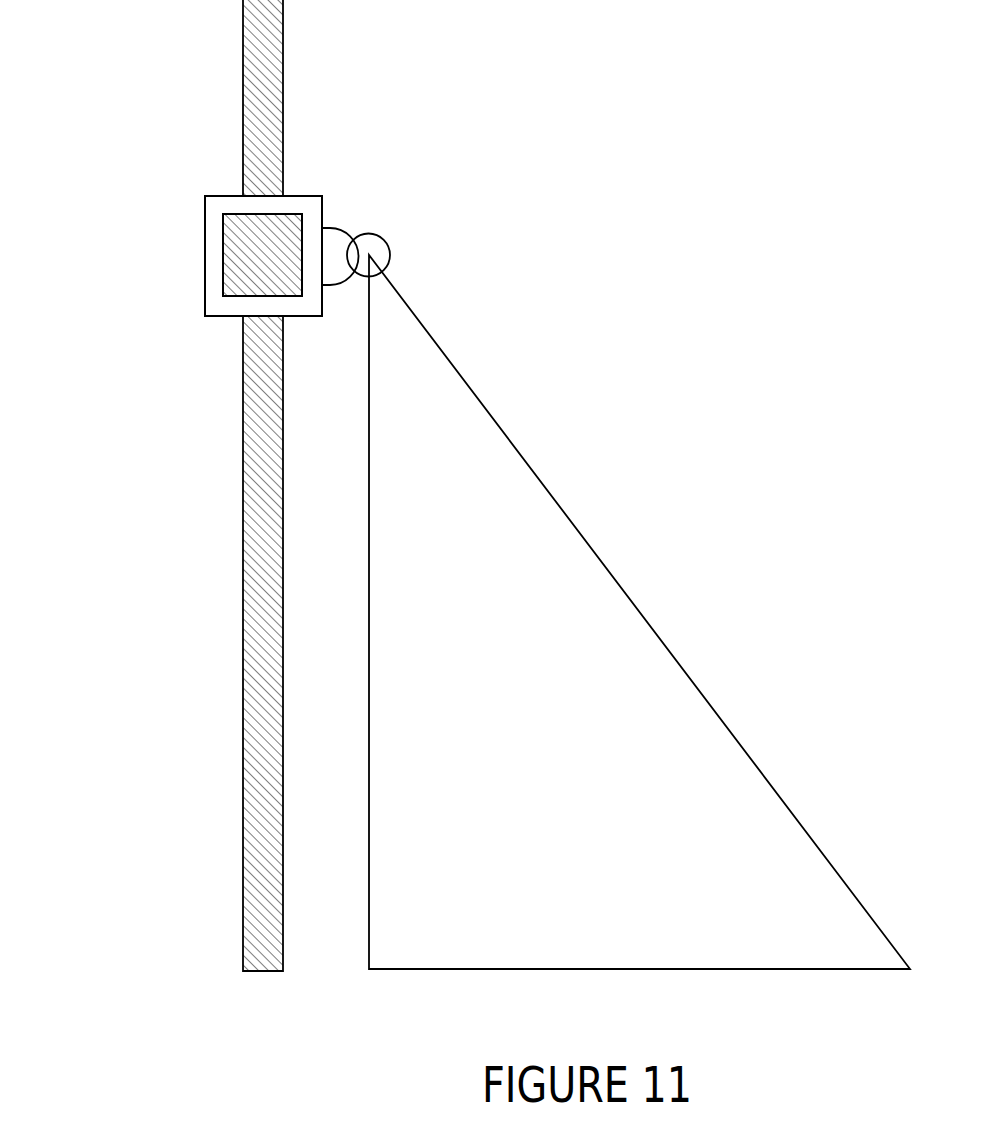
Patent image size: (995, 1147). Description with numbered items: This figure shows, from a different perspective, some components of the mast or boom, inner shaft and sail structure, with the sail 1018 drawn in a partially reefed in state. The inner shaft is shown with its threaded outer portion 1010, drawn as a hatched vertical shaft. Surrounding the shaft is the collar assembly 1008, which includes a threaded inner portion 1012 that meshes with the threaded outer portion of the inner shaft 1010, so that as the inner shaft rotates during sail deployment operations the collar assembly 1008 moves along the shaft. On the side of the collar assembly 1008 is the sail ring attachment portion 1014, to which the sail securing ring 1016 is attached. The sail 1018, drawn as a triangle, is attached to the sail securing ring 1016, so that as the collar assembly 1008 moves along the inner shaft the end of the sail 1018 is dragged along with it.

The collar assembly 1008 is at (215, 195).
The threaded outer portion of inner shaft 1010 is at (243, 455).
The threaded inner portion of collar assembly 1012 is at (223, 256).
The sail attachment portion of collar assembly 1014 is at (340, 225).
The sail securing ring 1016 is at (390, 252).
The sail 1018 is at (647, 612).